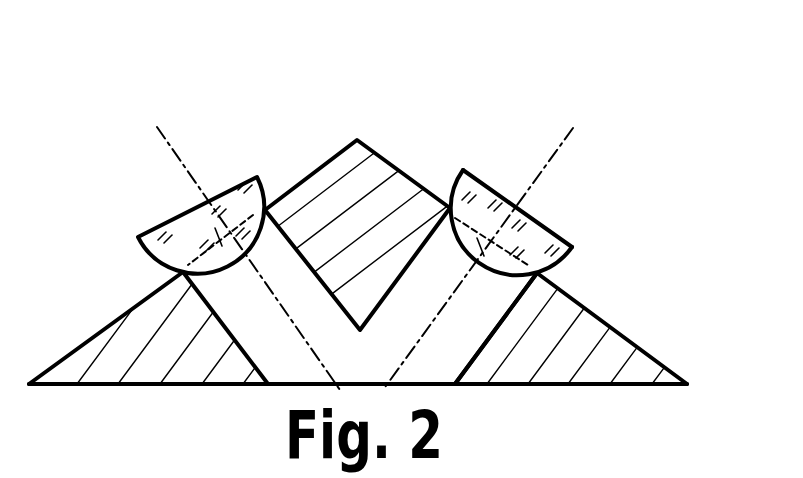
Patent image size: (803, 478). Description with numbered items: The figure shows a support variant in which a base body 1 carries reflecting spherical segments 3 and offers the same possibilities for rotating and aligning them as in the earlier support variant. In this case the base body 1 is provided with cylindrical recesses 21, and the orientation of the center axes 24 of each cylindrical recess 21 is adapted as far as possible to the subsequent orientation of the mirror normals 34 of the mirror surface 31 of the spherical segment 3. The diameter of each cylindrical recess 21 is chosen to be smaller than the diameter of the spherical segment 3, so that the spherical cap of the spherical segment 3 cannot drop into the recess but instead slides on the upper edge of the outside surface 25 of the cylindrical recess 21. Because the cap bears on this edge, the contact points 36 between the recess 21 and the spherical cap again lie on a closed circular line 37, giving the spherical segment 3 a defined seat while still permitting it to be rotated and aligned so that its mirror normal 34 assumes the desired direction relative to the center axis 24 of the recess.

The base body 1 is at (607, 372).
The spherical segment 3 is at (587, 142).
The cylindrical recess 21 is at (417, 263).
The center axis 24 is at (438, 313).
The outside surface 25 is at (478, 355).
The mirror surface 31 is at (537, 215).
The mirror normal 34 is at (539, 178).
The contact points 36 is at (265, 210).
The closed circular line 37 is at (508, 249).